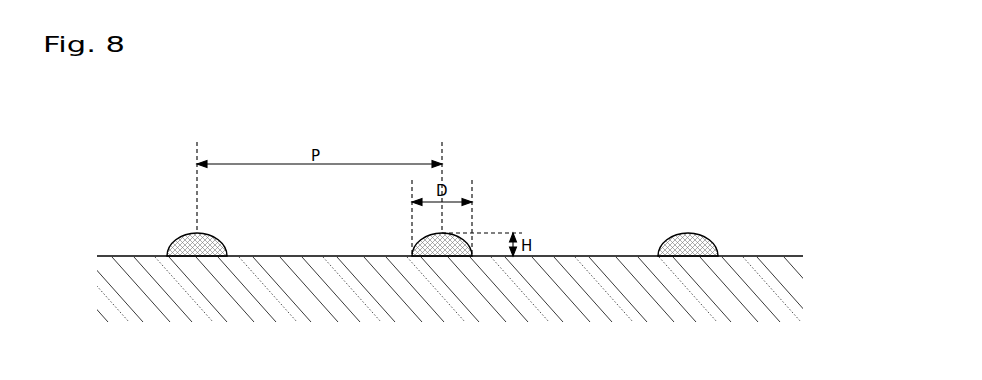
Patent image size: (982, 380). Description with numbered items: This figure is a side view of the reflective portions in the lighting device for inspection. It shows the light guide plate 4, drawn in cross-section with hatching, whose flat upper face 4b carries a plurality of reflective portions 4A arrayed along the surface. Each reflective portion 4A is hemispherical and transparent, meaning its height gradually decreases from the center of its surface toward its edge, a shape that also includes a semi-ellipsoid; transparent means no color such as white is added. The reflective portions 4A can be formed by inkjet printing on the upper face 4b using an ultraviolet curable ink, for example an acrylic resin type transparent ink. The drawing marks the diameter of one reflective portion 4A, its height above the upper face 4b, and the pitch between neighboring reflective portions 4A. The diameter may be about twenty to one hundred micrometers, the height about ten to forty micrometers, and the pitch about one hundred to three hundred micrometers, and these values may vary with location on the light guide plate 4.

The light guide plate 4 is at (772, 273).
The upper face 4b is at (565, 257).
The reflective portion 4A is at (692, 244).